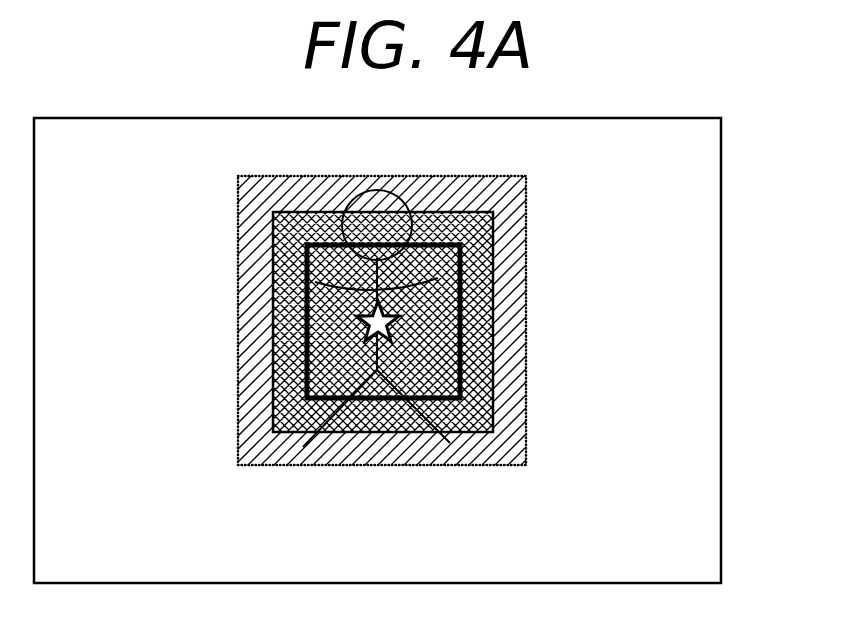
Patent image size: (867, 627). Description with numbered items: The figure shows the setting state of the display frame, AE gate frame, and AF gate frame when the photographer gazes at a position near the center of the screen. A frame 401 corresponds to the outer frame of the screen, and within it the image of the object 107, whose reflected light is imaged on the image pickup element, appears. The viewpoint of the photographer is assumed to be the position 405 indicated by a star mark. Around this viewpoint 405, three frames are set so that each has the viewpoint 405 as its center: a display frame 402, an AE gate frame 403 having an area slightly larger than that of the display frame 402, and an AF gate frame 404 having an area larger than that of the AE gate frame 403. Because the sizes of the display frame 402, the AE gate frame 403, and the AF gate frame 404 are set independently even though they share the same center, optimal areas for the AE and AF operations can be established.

The frame 401 is at (722, 128).
The display frame 402 is at (462, 208).
The AE gate frame 403 is at (463, 210).
The AF gate frame 404 is at (512, 453).
The viewpoint 405 is at (462, 284).
The object 107 is at (402, 364).